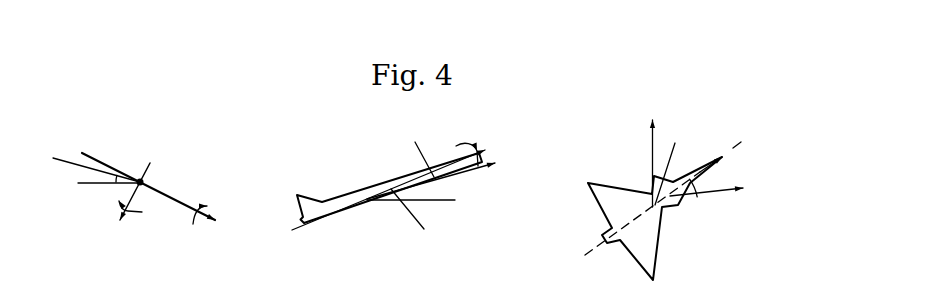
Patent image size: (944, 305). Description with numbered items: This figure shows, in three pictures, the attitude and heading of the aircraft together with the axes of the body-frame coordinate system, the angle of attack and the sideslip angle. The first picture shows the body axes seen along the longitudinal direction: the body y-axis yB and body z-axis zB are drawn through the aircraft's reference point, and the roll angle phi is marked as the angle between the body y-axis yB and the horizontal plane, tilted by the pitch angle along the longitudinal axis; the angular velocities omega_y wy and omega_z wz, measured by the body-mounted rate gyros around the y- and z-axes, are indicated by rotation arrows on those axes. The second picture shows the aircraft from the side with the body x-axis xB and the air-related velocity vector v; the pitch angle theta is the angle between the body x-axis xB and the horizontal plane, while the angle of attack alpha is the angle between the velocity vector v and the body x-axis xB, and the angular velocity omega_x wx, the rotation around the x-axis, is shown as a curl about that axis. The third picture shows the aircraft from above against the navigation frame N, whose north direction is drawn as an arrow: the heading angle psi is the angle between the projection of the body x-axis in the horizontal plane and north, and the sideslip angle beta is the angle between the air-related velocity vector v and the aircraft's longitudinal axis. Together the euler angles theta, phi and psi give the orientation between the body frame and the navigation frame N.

The body y-axis yB is at (148, 199).
The body z-axis zB is at (127, 205).
The roll angle phi is at (89, 164).
The angular velocity around the z-axis wz is at (116, 201).
The angular velocity around the y-axis wy is at (209, 205).
The body x-axis xB is at (396, 178).
The air-related velocity vector v is at (447, 176).
The pitch angle theta is at (411, 218).
The angle of attack alpha is at (419, 150).
The angular velocity around the x-axis wx is at (471, 169).
The navigation frame N is at (654, 153).
The heading angle psi is at (668, 163).
The sideslip angle beta is at (704, 186).